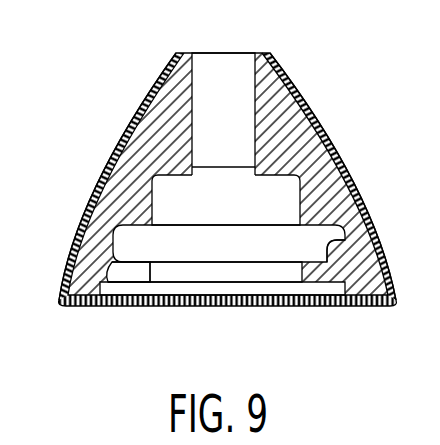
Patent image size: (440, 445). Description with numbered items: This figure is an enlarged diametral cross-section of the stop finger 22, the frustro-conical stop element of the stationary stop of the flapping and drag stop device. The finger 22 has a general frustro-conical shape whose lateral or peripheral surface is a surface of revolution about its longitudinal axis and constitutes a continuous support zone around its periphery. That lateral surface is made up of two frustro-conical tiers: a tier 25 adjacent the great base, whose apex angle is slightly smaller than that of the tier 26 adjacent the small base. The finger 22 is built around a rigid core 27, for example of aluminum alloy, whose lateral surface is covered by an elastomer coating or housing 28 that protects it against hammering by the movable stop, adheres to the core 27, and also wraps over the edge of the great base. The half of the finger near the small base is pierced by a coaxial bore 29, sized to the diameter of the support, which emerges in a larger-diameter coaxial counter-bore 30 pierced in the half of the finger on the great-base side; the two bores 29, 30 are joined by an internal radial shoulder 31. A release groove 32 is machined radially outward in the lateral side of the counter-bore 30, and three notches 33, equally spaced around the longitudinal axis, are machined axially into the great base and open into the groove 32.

The stop finger 22 is at (316, 84).
The frustro-conical tier 25 is at (78, 243).
The frustro-conical tier 26 is at (129, 141).
The rigid core 27 is at (315, 127).
The coating or housing 28 is at (374, 222).
The coaxial bore 29 is at (192, 95).
The coaxial counter-bore 30 is at (300, 203).
The internal radial shoulder 31 is at (176, 177).
The release groove 32 is at (330, 242).
The notches 33 is at (132, 279).